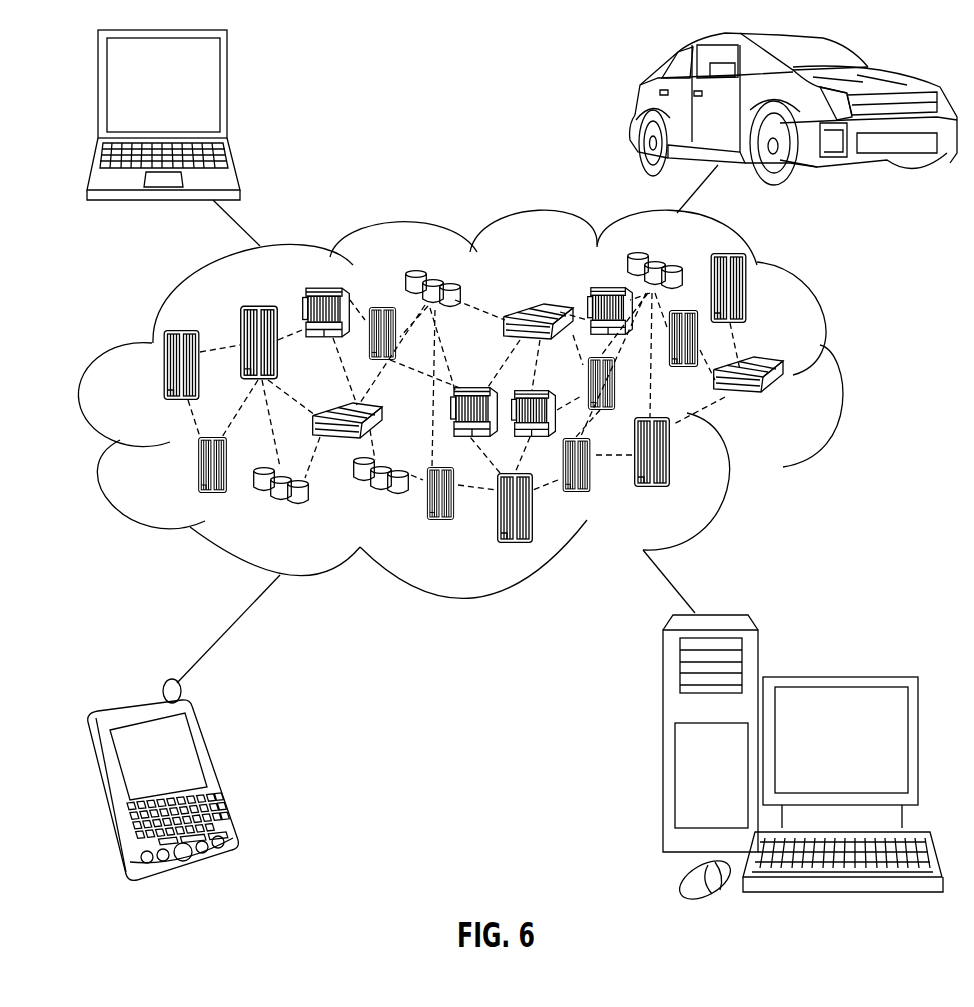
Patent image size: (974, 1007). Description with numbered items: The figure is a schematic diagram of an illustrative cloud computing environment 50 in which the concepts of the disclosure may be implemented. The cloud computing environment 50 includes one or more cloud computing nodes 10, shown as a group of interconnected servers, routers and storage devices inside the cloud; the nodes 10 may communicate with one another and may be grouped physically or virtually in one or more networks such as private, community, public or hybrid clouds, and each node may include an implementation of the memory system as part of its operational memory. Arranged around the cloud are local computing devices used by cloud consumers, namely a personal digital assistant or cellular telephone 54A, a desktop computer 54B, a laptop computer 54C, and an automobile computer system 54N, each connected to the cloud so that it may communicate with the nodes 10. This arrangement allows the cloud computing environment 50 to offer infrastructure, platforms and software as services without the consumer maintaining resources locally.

The cloud computing nodes 10 is at (800, 416).
The cloud computing environment 50 is at (845, 373).
The personal digital assistant or cellular telephone 54A is at (217, 768).
The desktop computer 54B is at (840, 677).
The laptop computer 54C is at (232, 91).
The automobile computer system 54N is at (638, 110).